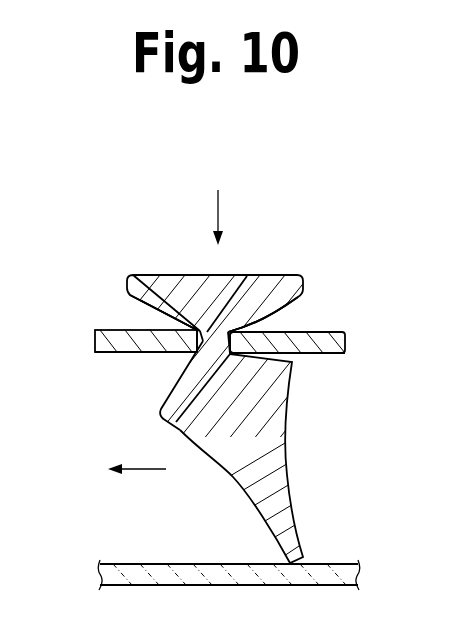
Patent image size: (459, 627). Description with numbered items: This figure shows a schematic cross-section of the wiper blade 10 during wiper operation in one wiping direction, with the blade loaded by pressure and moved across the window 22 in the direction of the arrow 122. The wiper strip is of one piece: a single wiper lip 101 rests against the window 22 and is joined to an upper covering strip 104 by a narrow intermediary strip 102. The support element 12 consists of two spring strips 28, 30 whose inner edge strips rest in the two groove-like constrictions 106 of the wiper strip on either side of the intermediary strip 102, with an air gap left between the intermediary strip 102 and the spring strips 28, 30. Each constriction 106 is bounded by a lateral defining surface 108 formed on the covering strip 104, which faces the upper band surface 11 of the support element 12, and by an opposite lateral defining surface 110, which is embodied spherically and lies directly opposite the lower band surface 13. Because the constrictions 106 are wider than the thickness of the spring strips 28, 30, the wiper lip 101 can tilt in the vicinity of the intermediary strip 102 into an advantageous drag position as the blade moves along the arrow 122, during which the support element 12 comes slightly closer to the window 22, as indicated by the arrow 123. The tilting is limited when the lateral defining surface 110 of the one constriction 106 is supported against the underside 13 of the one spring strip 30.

The wiper blade 10 is at (189, 256).
The covering strip 104 is at (233, 277).
The lateral defining surface 108 is at (127, 297).
The groove-like constriction 106 is at (147, 319).
The intermediary strip 102 is at (200, 355).
The lateral defining surface 110 is at (173, 388).
The wiper lip 101 is at (273, 512).
The arrow 123 is at (218, 207).
The upper band surface 11 is at (130, 329).
The support element 12 is at (332, 318).
The spring strip 28 is at (95, 344).
The spring strip 30 is at (346, 349).
The lower band surface 13 is at (103, 353).
The arrow 122 is at (143, 470).
The window 22 is at (138, 564).